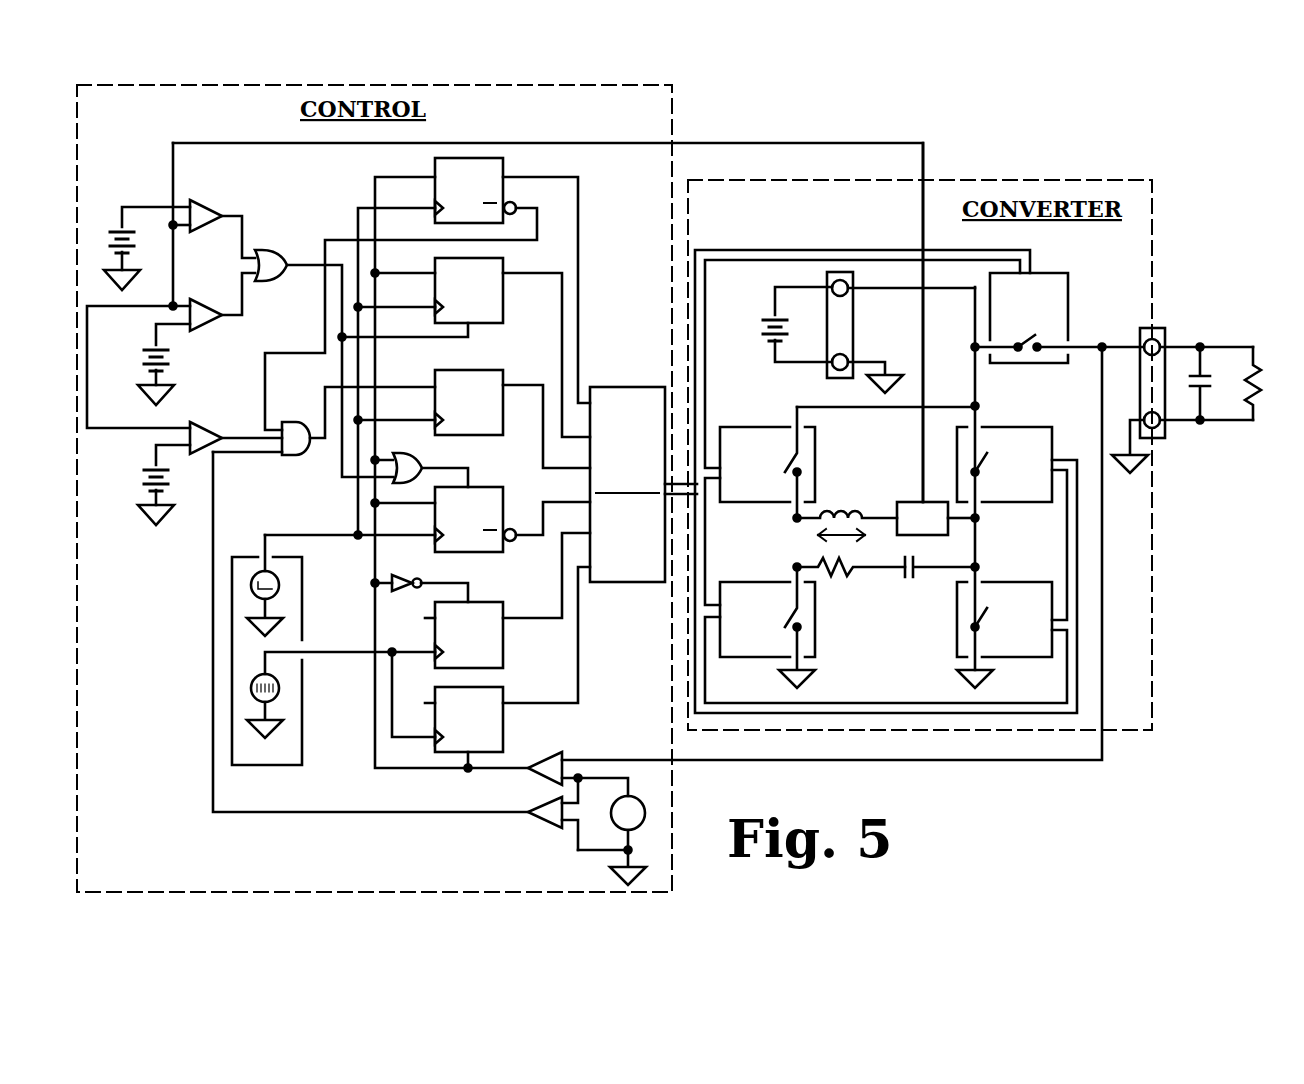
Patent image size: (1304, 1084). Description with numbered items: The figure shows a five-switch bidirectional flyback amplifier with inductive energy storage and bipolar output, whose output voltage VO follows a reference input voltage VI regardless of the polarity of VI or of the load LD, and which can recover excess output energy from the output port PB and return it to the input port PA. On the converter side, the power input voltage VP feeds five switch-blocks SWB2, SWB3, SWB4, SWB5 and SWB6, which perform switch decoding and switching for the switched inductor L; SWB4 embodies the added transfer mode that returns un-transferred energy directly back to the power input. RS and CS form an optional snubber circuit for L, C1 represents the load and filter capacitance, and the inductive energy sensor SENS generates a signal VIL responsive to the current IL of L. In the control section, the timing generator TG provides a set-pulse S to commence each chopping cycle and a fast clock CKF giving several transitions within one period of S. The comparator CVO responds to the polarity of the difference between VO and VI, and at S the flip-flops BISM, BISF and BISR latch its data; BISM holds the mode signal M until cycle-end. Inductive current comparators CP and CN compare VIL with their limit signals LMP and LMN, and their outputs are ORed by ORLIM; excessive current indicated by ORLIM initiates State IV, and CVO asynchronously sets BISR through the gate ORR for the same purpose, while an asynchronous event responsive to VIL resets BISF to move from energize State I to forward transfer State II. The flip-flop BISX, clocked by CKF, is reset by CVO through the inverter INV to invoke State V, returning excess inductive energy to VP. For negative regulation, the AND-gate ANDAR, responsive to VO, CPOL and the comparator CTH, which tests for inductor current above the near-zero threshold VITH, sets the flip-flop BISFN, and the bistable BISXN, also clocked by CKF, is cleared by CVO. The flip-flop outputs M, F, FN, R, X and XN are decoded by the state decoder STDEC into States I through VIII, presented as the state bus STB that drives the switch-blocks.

The positive limit signal LMP is at (138, 207).
The inductive current comparator CP is at (210, 207).
The inductive current comparator CN is at (212, 326).
The negative limit signal LMN is at (150, 326).
The limit OR gate ORLIM is at (280, 250).
The threshold comparator CTH is at (208, 425).
The threshold signal VITH is at (150, 447).
The AND-gate ANDAR is at (290, 456).
The set-pulse S is at (355, 522).
The mode flip-flop BISM is at (435, 172).
The mode signal M is at (578, 188).
The forward flip-flop BISF is at (435, 266).
The forward signal F is at (558, 300).
The negative forward flip-flop BISFN is at (440, 370).
The negative forward signal FN is at (525, 385).
The reset OR gate ORR is at (425, 457).
The reverse flip-flop BISR is at (490, 487).
The reverse signal R is at (527, 545).
The inverter INV is at (408, 580).
The flip-flop X BISX is at (505, 652).
The signal X is at (545, 618).
The bistable XN BISXN is at (497, 688).
The signal XN is at (580, 645).
The state decoder STDEC is at (643, 484).
The timing generator TG is at (302, 588).
The fast clock CKF is at (341, 694).
The output comparator CVO is at (545, 757).
The polarity signal CPOL is at (540, 828).
The reference input voltage VI is at (632, 779).
The inductive current signal VIL is at (923, 150).
The state bus STB is at (810, 250).
The power input voltage VP is at (770, 292).
The power input port PA is at (853, 340).
The switch-block SWB2 is at (767, 462).
The switch-block SWB3 is at (767, 602).
The switch-block SWB4 is at (1004, 464).
The switch-block SWB5 is at (1004, 635).
The switch-block SWB6 is at (1059, 318).
The switched inductor L is at (840, 505).
The inductor current IL is at (856, 543).
The inductive energy sensor SENS is at (897, 503).
The snubber resistor RS is at (838, 578).
The snubber capacitor CS is at (912, 580).
The output port PB is at (1140, 336).
The output voltage VO is at (1203, 345).
The load LD is at (1250, 385).
The load and filter capacitance C1 is at (1205, 390).